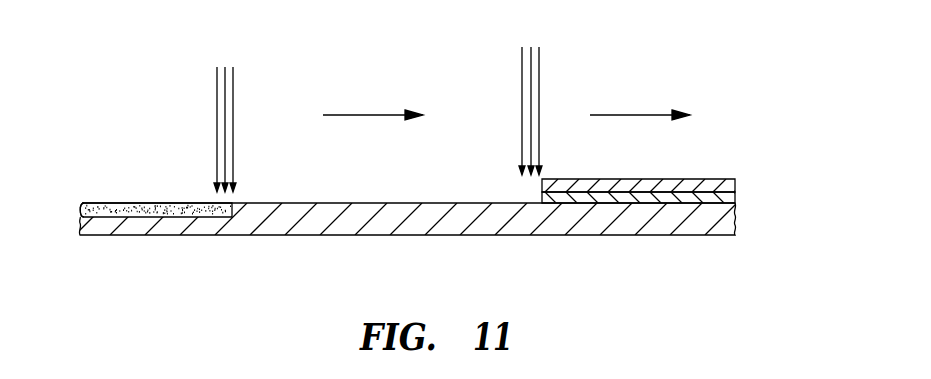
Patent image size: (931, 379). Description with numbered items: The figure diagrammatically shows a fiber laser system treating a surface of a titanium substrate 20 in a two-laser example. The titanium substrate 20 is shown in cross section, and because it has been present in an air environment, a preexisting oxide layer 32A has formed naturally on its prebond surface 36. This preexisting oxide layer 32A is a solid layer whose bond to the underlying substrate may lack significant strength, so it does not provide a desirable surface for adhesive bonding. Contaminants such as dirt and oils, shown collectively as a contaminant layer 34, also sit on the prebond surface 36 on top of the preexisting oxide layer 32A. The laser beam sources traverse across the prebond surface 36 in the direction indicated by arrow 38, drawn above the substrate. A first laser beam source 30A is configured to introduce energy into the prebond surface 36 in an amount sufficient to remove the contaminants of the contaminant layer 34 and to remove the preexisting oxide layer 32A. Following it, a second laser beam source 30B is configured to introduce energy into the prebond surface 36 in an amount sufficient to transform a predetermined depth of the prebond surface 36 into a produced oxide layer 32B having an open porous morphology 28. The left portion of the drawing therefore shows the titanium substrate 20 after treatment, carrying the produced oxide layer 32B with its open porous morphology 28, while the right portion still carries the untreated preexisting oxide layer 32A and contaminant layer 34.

The titanium substrate 20 is at (738, 212).
The open porous morphology 28 is at (125, 210).
The first laser beam source 30A is at (233, 74).
The second laser beam source 30B is at (539, 67).
The preexisting oxide layer 32A is at (735, 196).
The produced oxide layer 32B is at (84, 210).
The contaminant layer 34 is at (735, 184).
The prebond surface 36 is at (689, 151).
The arrow 38 is at (363, 114).